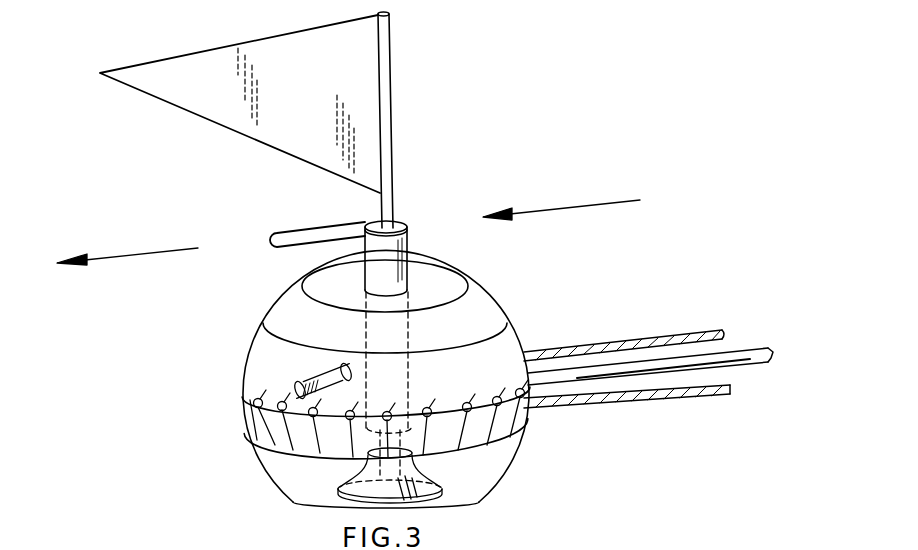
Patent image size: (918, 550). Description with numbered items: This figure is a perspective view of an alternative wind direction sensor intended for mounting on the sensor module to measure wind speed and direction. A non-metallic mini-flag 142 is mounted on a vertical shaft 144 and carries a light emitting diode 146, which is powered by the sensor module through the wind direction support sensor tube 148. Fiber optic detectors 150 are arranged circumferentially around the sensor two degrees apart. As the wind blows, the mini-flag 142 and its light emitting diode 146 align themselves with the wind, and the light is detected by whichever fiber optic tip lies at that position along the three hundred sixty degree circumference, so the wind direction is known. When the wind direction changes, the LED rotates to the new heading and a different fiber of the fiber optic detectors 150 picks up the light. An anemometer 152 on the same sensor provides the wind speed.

The mini-flag 142 is at (312, 99).
The vertical shaft 144 is at (397, 104).
The light emitting diode 146 is at (297, 382).
The wind direction support sensor tube 148 is at (596, 362).
The fiber optic detectors 150 is at (300, 418).
The anemometer 152 is at (293, 228).